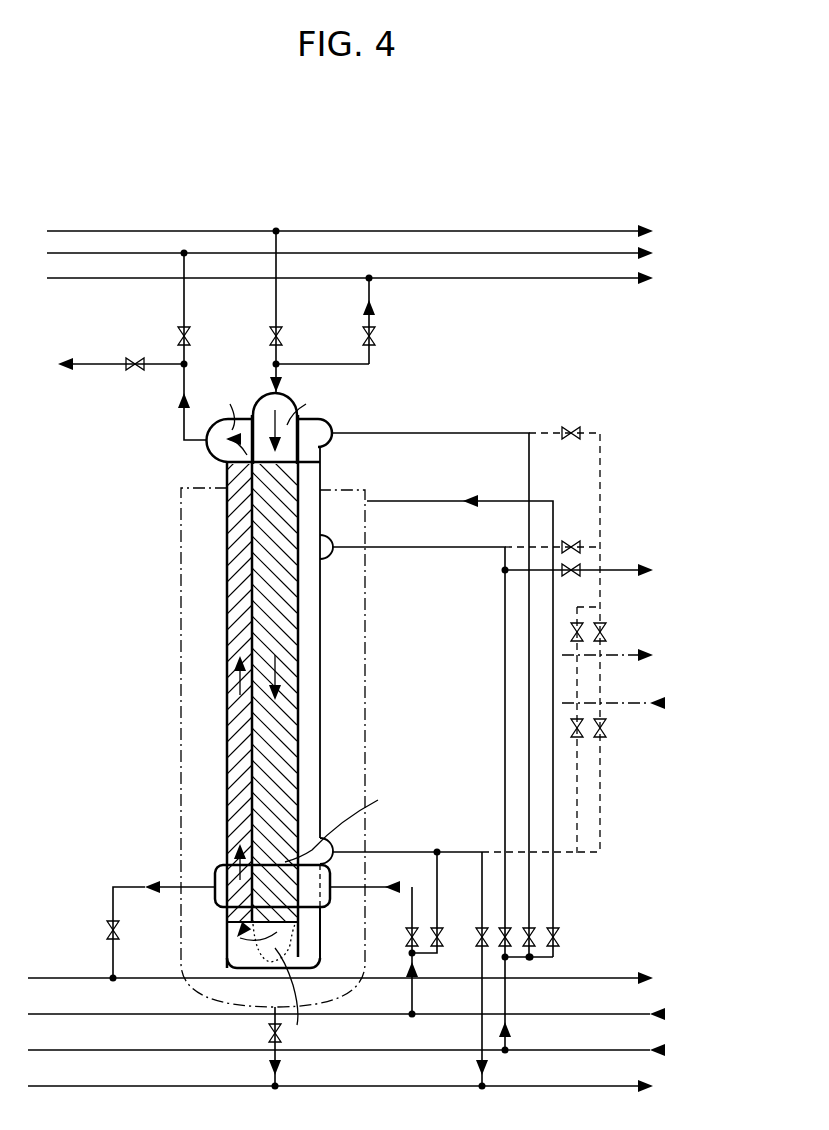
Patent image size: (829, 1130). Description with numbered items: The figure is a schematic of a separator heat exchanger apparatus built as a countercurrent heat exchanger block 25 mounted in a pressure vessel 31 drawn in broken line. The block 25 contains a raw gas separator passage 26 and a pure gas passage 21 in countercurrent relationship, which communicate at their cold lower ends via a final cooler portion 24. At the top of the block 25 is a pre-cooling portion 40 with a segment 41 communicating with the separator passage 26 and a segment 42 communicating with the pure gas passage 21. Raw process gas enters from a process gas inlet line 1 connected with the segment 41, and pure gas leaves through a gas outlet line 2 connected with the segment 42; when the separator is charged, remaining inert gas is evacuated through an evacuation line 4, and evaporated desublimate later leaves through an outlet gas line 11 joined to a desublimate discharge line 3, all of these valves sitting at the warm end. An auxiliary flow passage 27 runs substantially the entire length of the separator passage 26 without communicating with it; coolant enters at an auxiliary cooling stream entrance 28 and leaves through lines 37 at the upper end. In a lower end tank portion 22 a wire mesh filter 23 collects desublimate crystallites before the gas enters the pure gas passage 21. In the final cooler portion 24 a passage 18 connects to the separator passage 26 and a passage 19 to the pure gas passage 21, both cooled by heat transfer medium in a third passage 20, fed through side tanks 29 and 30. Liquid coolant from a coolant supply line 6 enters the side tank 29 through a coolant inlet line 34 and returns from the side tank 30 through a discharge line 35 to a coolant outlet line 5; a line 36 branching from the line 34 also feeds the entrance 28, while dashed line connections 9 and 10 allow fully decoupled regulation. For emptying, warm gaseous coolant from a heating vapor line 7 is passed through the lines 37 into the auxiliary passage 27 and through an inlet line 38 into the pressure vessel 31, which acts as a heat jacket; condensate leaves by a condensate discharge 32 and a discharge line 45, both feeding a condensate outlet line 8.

The process gas inlet line 1 is at (137, 230).
The gas outlet line 2 is at (97, 253).
The desublimate discharge line 3 is at (147, 278).
The evacuation line 4 is at (84, 364).
The coolant outlet line 5 is at (60, 978).
The coolant supply line 6 is at (95, 1014).
The heating vapor line 7 is at (105, 1050).
The condensate outlet line 8 is at (129, 1086).
The line connection 9 is at (622, 655).
The line connection 10 is at (622, 703).
The outlet gas line 11 is at (371, 352).
The passage 18 is at (262, 850).
The passage 19 is at (237, 875).
The third passage 20 is at (255, 890).
The pure gas passage 21 is at (233, 597).
The lower end tank portion 22 is at (316, 950).
The filter 23 is at (256, 950).
The final cooler portion 24 is at (138, 780).
The heat exchanger block 25 is at (143, 580).
The raw gas separator passage 26 is at (268, 617).
The auxiliary flow passage 27 is at (312, 752).
The auxiliary cooling stream entrance 28 is at (325, 848).
The side tank 29 is at (331, 898).
The side tank 30 is at (216, 900).
The pressure vessel 31 is at (367, 625).
The condensate discharge 32 is at (278, 1065).
The coolant inlet line 34 is at (416, 893).
The discharge line 35 is at (111, 906).
The line 36 is at (438, 868).
The lines 37' and 37'' 37 is at (480, 422).
The inlet line 38 is at (436, 501).
The pre-cooling portion 40 is at (133, 490).
The segment 41 is at (263, 522).
The segment 42 is at (233, 509).
The discharge line 45 is at (482, 900).